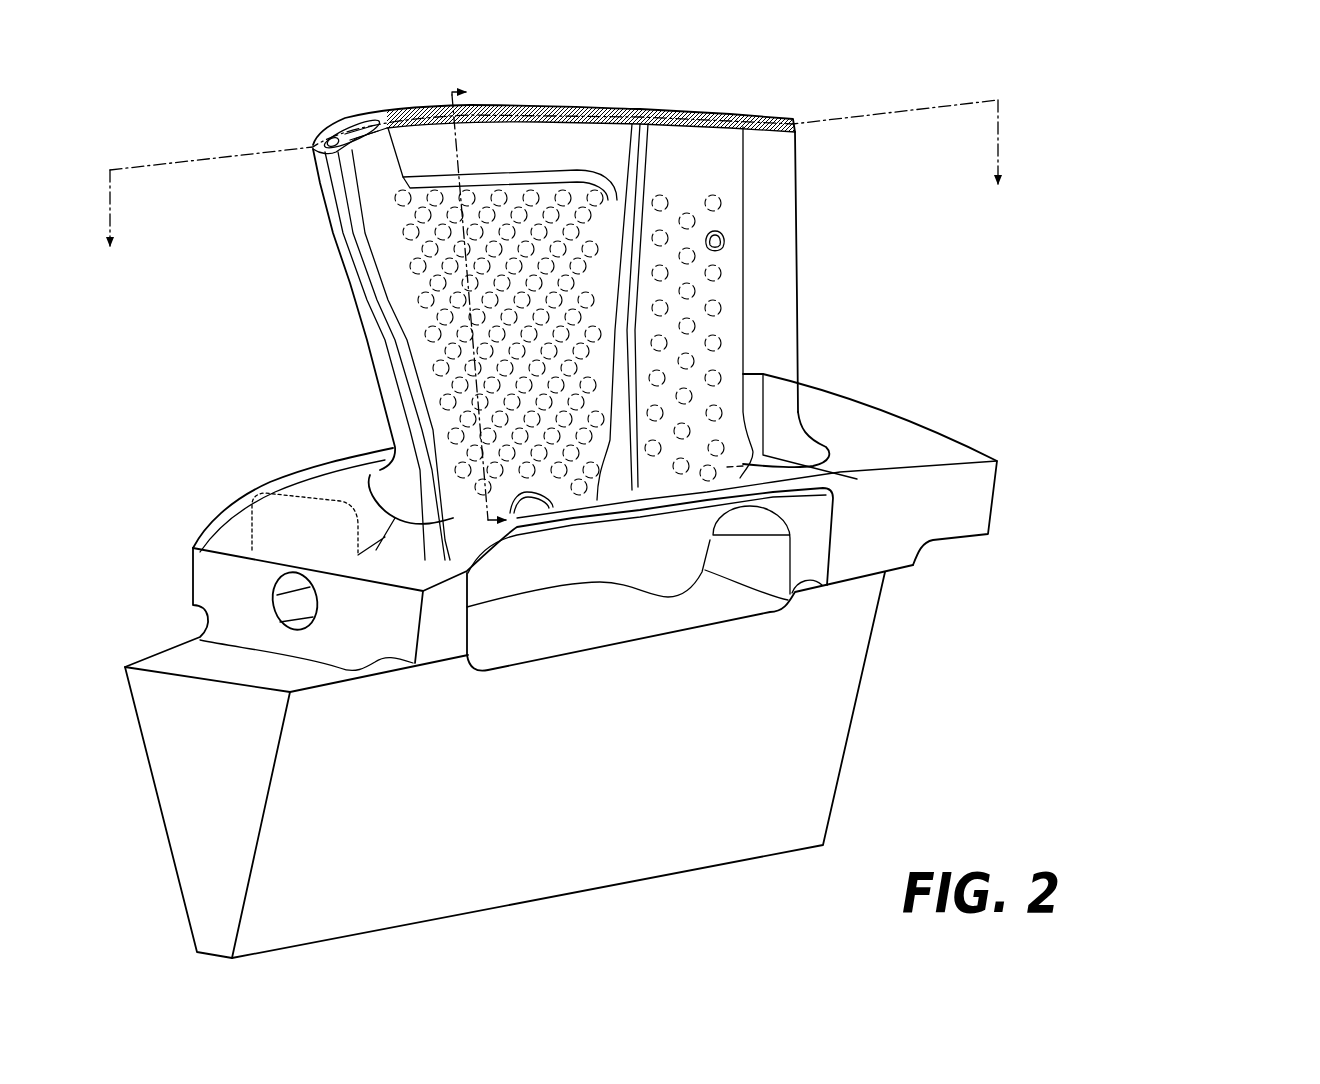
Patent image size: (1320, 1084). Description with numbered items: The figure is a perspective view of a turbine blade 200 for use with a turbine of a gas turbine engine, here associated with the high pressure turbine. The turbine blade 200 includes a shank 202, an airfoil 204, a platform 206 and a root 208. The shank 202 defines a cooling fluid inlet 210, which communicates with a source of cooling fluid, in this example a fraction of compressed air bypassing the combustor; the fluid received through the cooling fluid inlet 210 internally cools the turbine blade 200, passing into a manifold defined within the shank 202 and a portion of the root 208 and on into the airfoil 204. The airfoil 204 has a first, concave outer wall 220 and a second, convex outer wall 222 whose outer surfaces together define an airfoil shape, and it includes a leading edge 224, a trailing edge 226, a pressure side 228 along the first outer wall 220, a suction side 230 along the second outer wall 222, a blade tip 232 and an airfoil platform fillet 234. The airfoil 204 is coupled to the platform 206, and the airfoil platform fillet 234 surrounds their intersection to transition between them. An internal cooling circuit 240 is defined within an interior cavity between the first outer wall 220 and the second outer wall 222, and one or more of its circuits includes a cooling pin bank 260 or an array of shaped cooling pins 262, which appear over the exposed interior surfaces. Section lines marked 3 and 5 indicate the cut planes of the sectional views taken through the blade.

The turbine blade 200 is at (1219, 170).
The shank 202 is at (982, 518).
The airfoil 204 is at (836, 251).
The platform 206 is at (900, 427).
The root 208 is at (886, 704).
The cooling fluid inlet 210 is at (277, 602).
The first, concave outer wall 220 is at (600, 140).
The second, convex outer wall 222 is at (377, 107).
The leading edge 224 is at (335, 222).
The trailing edge 226 is at (799, 233).
The pressure side 228 is at (786, 325).
The suction side 230 is at (424, 106).
The blade tip 232 is at (488, 105).
The airfoil platform fillet 234 is at (800, 426).
The internal cooling circuit 240 is at (527, 166).
The cooling pin bank 260 is at (485, 175).
The shaped cooling pins 262 is at (408, 307).
The section line 3- 3 is at (554, 191).
The section line 5- 5 is at (483, 307).